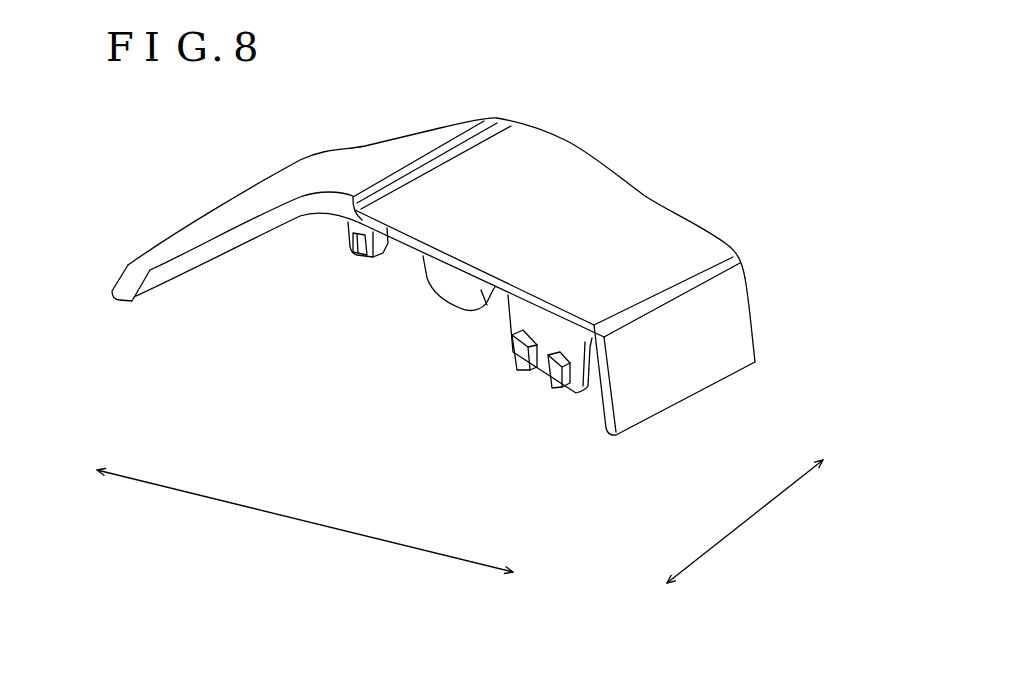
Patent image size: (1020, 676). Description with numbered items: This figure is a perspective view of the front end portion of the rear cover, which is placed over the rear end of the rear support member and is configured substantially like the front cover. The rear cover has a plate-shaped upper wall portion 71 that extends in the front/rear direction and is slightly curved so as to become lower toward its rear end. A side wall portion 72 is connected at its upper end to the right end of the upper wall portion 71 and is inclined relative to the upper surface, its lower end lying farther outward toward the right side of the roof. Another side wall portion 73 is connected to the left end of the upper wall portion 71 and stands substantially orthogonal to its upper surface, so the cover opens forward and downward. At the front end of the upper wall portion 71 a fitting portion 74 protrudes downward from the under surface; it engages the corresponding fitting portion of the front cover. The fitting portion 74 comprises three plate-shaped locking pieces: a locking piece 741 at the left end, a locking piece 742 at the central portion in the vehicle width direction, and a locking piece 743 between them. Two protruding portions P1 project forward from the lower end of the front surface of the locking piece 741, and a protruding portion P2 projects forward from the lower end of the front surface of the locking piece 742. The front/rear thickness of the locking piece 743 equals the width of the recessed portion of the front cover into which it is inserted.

The upper wall portion 71 is at (540, 213).
The side wall portion 72 is at (391, 143).
The side wall portion 73 is at (670, 380).
The fitting portion 74 is at (383, 402).
The locking piece 741 is at (540, 368).
The locking piece 742 is at (373, 263).
The locking piece 743 is at (455, 290).
The protruding portion P1 is at (517, 358).
The protruding portion P2 is at (350, 252).